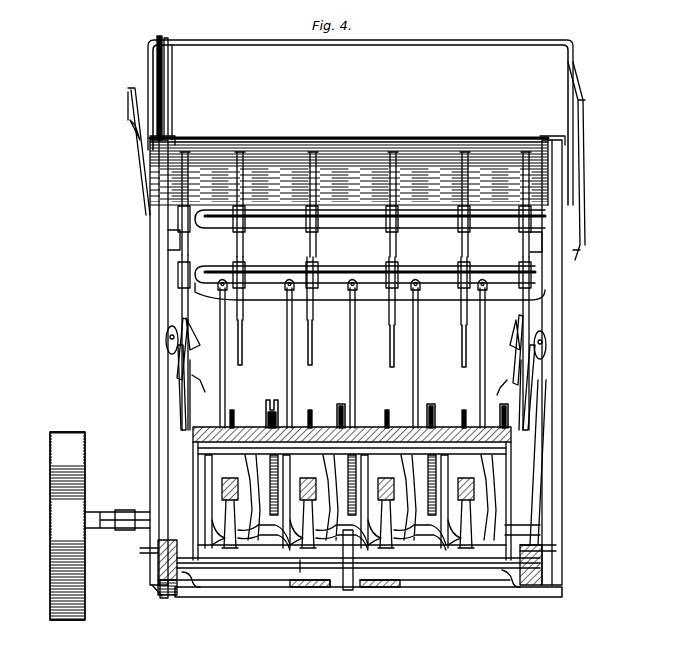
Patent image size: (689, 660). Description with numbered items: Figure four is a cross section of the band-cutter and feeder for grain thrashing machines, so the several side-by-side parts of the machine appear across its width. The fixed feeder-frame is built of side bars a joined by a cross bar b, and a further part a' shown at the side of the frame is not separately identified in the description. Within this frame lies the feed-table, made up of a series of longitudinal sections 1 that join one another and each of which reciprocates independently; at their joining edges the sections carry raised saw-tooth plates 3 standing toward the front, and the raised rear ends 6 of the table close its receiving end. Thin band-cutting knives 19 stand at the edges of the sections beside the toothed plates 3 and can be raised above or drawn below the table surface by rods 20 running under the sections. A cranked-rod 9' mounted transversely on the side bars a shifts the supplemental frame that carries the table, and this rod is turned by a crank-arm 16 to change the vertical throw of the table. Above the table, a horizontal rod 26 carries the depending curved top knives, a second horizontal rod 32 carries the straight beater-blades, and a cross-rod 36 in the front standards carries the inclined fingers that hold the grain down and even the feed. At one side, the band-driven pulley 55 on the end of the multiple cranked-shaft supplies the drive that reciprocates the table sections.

The longitudinal table section 1 is at (352, 426).
The raised teeth 3 is at (519, 462).
The raised rear ends 6 is at (343, 560).
The cranked-rod 9' is at (312, 570).
The crank-arm 16 is at (158, 563).
The knives 19 is at (269, 404).
The rods 20 is at (356, 269).
The horizontal rod 26 is at (562, 270).
The horizontal rod 32 is at (330, 233).
The cross-rod 36 is at (370, 287).
The band-driven pulley 55 is at (100, 526).
The side bars a is at (544, 565).
The bearing a' is at (147, 594).
The cross bar b is at (368, 603).